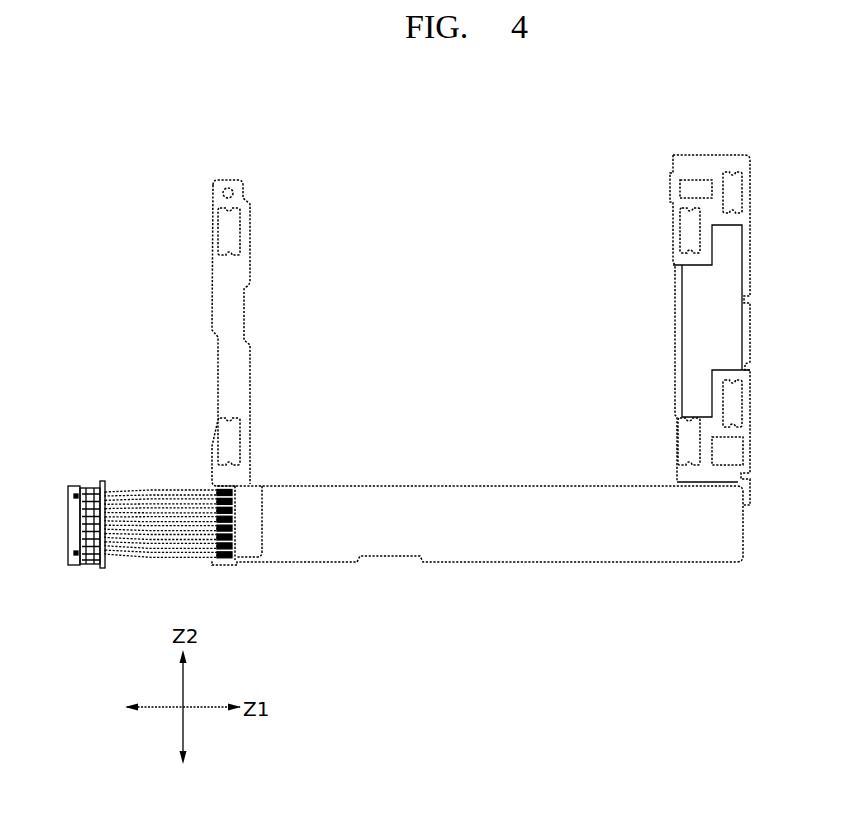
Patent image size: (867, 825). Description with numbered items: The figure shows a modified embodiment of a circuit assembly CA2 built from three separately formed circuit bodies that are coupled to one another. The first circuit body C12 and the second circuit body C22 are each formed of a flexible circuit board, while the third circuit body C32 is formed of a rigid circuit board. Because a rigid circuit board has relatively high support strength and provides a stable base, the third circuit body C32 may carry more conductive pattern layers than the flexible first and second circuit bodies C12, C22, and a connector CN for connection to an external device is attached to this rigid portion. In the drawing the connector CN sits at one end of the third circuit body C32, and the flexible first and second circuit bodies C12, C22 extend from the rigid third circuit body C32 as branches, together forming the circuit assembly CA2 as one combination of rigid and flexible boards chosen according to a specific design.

The circuit assembly CA2 is at (578, 317).
The second circuit body C22 is at (240, 381).
The third circuit body C32 is at (463, 497).
The first circuit body C12 is at (690, 361).
The connector CN is at (172, 490).